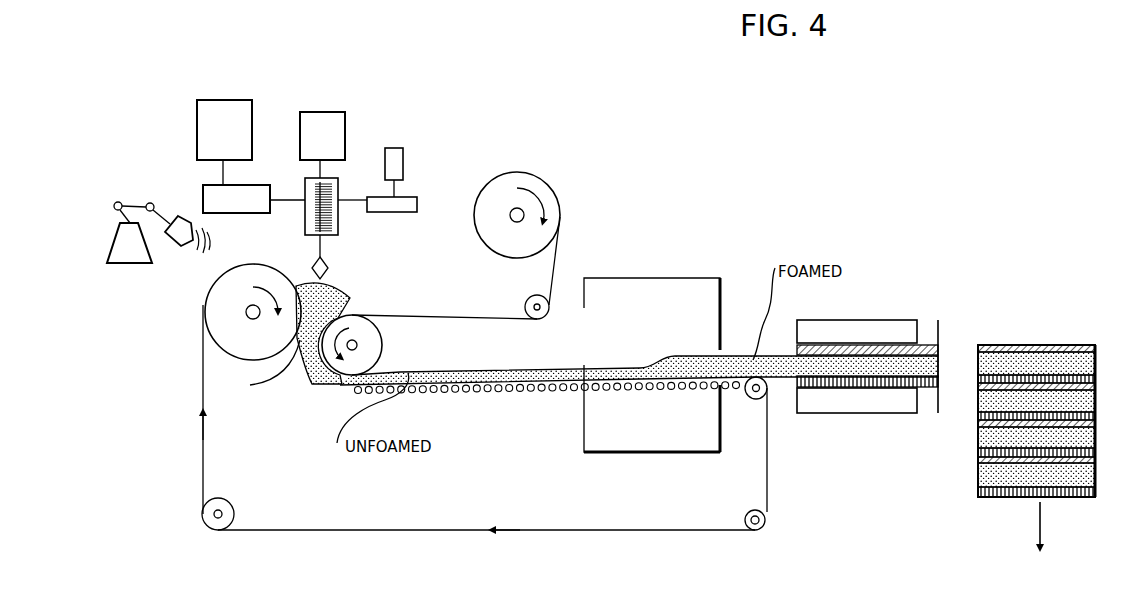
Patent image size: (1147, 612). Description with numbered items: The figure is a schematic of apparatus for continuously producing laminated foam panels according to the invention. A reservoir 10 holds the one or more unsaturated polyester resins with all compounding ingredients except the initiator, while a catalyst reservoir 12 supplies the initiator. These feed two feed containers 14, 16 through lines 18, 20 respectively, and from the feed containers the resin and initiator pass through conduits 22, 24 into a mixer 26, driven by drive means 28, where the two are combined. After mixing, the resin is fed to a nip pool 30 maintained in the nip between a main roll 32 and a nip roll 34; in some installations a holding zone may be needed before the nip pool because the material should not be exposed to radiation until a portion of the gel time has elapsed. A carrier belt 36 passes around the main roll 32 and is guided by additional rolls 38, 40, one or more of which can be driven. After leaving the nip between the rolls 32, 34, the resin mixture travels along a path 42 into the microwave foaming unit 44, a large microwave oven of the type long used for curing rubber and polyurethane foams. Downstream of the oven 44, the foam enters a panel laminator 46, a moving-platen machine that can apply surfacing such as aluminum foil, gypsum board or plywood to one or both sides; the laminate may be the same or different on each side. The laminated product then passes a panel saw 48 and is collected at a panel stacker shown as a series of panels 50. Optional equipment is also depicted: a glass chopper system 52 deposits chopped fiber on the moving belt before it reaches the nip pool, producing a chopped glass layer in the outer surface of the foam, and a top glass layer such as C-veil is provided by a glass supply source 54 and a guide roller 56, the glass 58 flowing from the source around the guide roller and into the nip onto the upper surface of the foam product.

The reservoir 10 is at (230, 100).
The catalyst reservoir 12 is at (403, 162).
The feed container 14 is at (235, 205).
The feed container 16 is at (400, 209).
The line 18 is at (223, 172).
The line 20 is at (394, 190).
The conduit 22 is at (290, 200).
The conduit 24 is at (355, 200).
The mixer 26 is at (340, 188).
The drive means 28 is at (337, 132).
The nip pool 30 is at (345, 292).
The main roll 32 is at (257, 345).
The nip roll 34 is at (382, 345).
The carrier belt 36 is at (752, 400).
The roll 38 is at (766, 522).
The roll 40 is at (210, 527).
The path 42 is at (485, 376).
The microwave foaming unit 44 is at (668, 278).
The panel laminator 46 is at (843, 413).
The panel saw 48 is at (939, 322).
The panels 50 is at (1095, 432).
The glass chopper system 52 is at (120, 244).
The glass supply source 54 is at (553, 190).
The guide roller 56 is at (526, 300).
The glass 58 is at (555, 258).